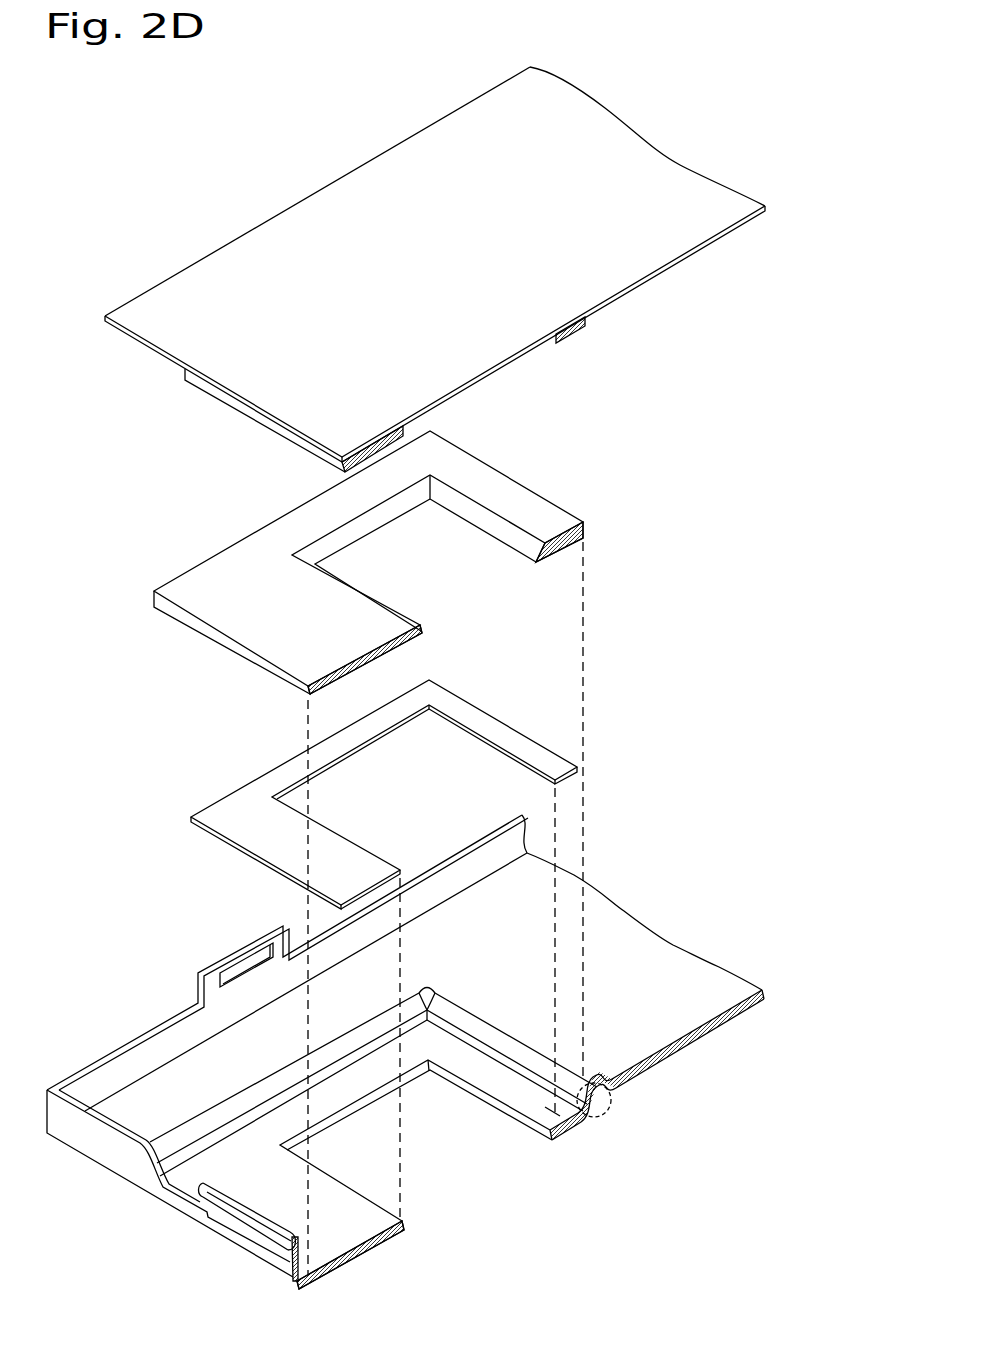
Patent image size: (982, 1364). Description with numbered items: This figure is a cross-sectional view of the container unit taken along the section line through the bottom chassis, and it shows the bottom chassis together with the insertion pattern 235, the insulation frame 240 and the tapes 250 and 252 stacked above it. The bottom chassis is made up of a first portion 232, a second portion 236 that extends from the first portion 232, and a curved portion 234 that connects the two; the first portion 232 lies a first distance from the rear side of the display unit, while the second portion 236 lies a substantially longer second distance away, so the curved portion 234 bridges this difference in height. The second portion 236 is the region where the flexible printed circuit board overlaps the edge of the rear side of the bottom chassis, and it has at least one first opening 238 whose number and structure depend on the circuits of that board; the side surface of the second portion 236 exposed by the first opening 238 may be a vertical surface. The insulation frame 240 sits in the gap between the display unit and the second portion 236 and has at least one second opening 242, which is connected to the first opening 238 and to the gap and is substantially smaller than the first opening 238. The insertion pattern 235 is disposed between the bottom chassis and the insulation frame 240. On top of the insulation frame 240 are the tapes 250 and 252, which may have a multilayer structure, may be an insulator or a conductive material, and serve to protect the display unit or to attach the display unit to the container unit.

The first portion 232 is at (658, 963).
The curved portion 234 is at (609, 1104).
The insertion pattern 235 is at (548, 757).
The second portion 236 is at (545, 1107).
The first opening 238 is at (461, 1166).
The insulation frame 240 is at (543, 505).
The second opening 242 is at (463, 588).
The tape 250 is at (582, 327).
The tape 252 is at (155, 347).